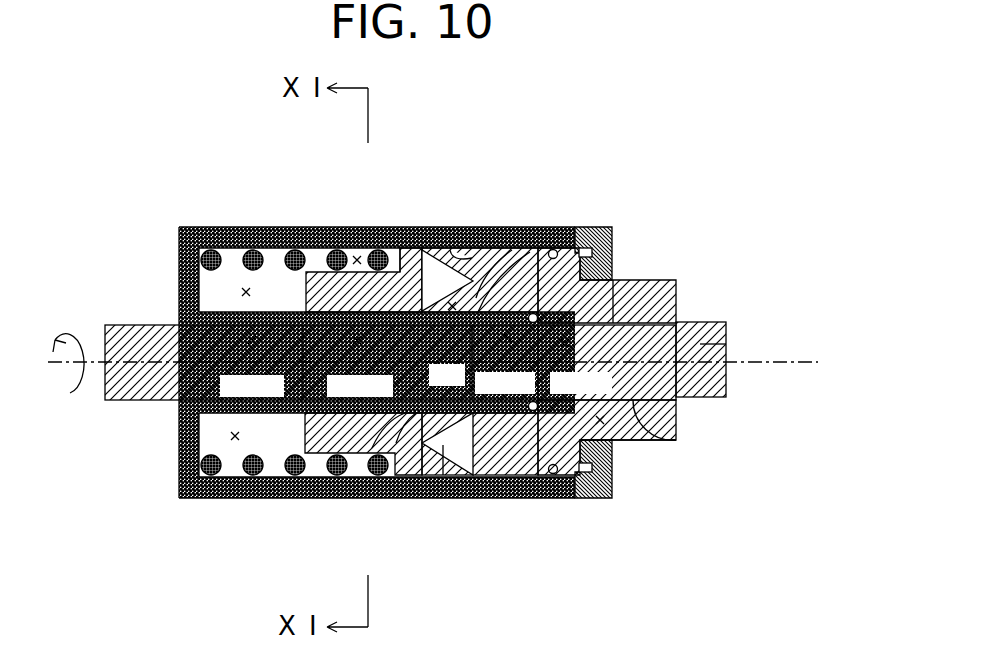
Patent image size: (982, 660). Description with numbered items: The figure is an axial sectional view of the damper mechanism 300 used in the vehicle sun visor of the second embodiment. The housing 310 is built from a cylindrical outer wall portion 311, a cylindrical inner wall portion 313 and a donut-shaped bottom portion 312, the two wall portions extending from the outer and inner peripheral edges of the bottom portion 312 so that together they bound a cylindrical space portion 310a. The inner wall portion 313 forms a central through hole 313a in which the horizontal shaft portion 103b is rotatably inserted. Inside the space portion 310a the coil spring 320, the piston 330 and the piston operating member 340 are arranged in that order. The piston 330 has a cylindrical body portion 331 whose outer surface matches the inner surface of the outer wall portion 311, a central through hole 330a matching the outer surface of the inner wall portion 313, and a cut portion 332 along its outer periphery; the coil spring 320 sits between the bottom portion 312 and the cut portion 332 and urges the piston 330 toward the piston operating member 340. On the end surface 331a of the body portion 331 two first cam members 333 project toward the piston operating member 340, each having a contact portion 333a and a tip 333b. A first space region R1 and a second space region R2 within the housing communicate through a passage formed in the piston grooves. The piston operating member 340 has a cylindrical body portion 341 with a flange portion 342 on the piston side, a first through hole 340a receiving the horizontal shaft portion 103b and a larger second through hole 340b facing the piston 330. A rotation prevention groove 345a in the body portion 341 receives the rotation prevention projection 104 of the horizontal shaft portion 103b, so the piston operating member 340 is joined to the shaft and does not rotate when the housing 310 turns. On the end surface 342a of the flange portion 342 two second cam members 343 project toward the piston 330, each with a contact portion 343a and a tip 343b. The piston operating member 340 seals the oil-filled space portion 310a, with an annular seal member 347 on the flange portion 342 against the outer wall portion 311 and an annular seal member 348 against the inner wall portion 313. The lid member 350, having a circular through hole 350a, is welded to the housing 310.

The damper mechanism 300 is at (694, 180).
The housing 310 is at (287, 228).
The outer wall portion 311 is at (228, 240).
The bottom portion 312 is at (182, 270).
The space portion 310a is at (234, 441).
The inner wall portion 313 is at (217, 326).
The through hole 313a is at (261, 362).
The coil spring 320 is at (256, 251).
The piston 330 is at (412, 262).
The through hole 330a is at (399, 362).
The body portion 331 is at (399, 258).
The end surface 331a is at (444, 470).
The cut portion 332 is at (356, 255).
The first cam member 333 is at (440, 272).
The contact portion 333a is at (522, 270).
The tip 333b is at (506, 258).
The piston operating member 340 is at (677, 295).
The first through hole 340a is at (581, 382).
The second through hole 340b is at (506, 362).
The body portion 341 is at (658, 283).
The flange portion 342 is at (552, 257).
The end surface 342a is at (453, 300).
The second cam member 343 is at (456, 472).
The contact portion 343a is at (380, 430).
The tip 343b is at (410, 445).
The rotation prevention groove 345a is at (667, 400).
The annular seal member 347 is at (557, 474).
The annular seal member 348 is at (522, 472).
The lid member 350 is at (613, 243).
The circular through hole 350a is at (653, 440).
The horizontal shaft portion 103b is at (722, 343).
The rotation prevention projection 104 is at (676, 437).
The first space region R1 is at (447, 374).
The second space region R2 is at (240, 291).